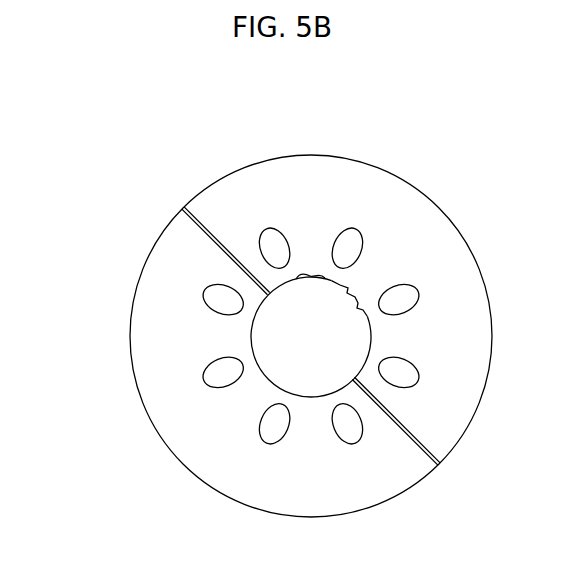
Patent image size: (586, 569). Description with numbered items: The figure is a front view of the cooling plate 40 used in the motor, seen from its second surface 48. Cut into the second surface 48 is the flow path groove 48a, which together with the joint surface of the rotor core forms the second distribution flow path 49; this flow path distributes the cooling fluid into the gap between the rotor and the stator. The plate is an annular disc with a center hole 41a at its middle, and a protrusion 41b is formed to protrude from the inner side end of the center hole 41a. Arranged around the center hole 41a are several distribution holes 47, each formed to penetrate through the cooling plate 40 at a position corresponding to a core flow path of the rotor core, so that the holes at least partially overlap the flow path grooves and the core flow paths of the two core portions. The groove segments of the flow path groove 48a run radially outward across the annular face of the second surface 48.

The cooling plate 40 is at (156, 226).
The second surface 48 is at (167, 332).
The flow path groove 48a is at (208, 240).
The second distribution flow path 49 is at (311, 336).
The distribution hole 47 is at (202, 378).
The center hole 41a is at (313, 278).
The protrusion 41b is at (388, 291).